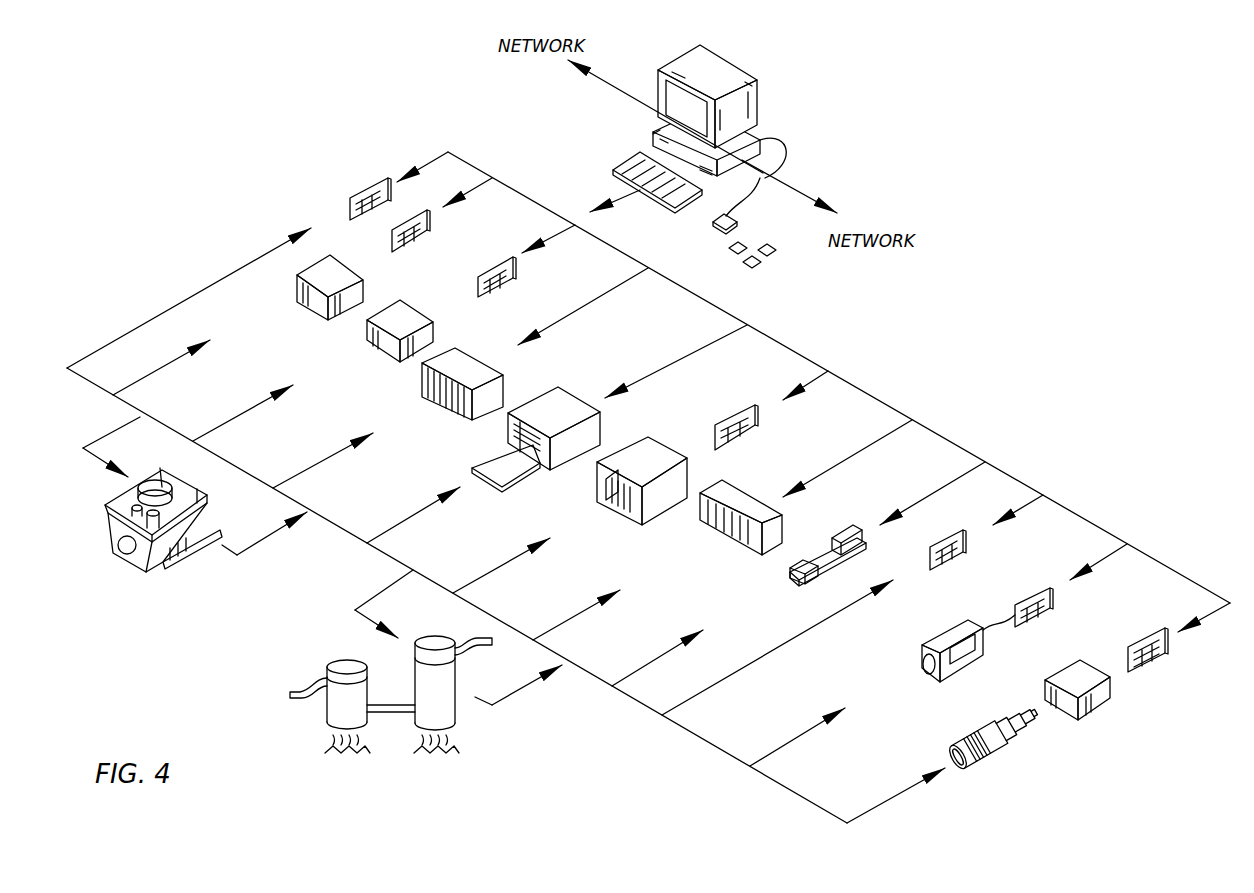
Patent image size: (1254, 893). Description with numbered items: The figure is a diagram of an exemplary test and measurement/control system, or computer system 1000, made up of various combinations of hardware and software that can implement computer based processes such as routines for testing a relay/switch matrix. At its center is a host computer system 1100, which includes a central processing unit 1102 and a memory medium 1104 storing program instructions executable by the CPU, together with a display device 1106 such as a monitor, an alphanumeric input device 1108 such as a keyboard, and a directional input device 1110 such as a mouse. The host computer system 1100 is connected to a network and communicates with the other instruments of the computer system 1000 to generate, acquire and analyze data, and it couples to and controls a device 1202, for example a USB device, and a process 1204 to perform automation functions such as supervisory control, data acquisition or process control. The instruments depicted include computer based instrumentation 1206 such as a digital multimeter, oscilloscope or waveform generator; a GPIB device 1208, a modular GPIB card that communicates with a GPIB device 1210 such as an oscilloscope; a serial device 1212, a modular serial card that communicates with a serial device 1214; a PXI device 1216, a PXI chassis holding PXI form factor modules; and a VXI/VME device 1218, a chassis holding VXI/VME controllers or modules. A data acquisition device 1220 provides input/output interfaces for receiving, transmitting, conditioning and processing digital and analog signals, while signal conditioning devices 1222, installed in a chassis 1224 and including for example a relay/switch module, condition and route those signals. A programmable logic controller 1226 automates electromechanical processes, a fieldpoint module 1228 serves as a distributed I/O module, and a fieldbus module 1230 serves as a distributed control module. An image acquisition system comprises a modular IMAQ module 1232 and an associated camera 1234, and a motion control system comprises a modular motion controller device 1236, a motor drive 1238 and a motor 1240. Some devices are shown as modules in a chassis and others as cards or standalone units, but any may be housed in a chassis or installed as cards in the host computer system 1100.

The test and measurement/control system 1000 is at (1003, 122).
The host computer system 1100 is at (790, 72).
The central processing unit (CPU) 1102 is at (650, 147).
The memory medium 1104 is at (650, 134).
The display device 1106 is at (707, 58).
The alphanumeric input device 1108 is at (613, 172).
The directional input device 1110 is at (730, 226).
The device 1202 is at (132, 570).
The process 1204 is at (327, 675).
The computer based instrumentation (CBI) 1206 is at (367, 187).
The GPIB device 1208 is at (408, 252).
The GPIB device 1210 is at (312, 310).
The serial device 1212 is at (500, 264).
The serial device 1214 is at (382, 353).
The PXI device 1216 is at (478, 361).
The VXI/VME device 1218 is at (492, 487).
The data acquisition (DAQ) device 1220 is at (715, 422).
The signal conditioning (SCXI) device 1222 is at (620, 512).
The chassis 1224 is at (597, 500).
The programmable logic controller (PLC) 1226 is at (722, 535).
The fieldpoint module 1228 is at (790, 580).
The fieldbus module 1230 is at (945, 576).
The IMAQ module 1232 is at (1035, 630).
The IMAQ device 1234 is at (925, 682).
The motion controller device 1236 is at (1152, 672).
The motor drive 1238 is at (1103, 719).
The motor 1240 is at (1003, 755).